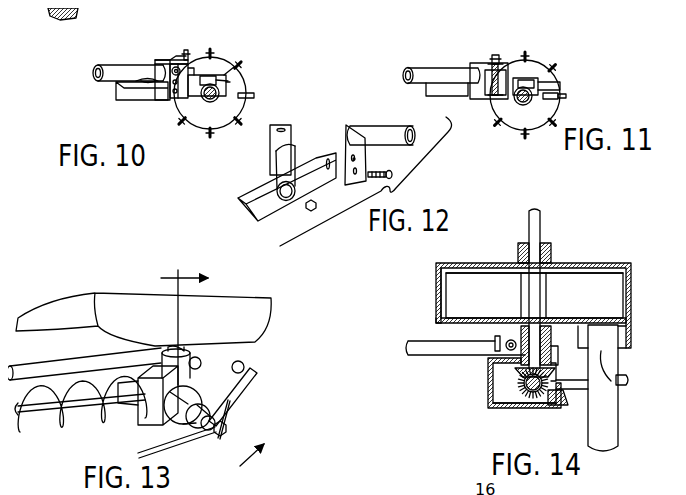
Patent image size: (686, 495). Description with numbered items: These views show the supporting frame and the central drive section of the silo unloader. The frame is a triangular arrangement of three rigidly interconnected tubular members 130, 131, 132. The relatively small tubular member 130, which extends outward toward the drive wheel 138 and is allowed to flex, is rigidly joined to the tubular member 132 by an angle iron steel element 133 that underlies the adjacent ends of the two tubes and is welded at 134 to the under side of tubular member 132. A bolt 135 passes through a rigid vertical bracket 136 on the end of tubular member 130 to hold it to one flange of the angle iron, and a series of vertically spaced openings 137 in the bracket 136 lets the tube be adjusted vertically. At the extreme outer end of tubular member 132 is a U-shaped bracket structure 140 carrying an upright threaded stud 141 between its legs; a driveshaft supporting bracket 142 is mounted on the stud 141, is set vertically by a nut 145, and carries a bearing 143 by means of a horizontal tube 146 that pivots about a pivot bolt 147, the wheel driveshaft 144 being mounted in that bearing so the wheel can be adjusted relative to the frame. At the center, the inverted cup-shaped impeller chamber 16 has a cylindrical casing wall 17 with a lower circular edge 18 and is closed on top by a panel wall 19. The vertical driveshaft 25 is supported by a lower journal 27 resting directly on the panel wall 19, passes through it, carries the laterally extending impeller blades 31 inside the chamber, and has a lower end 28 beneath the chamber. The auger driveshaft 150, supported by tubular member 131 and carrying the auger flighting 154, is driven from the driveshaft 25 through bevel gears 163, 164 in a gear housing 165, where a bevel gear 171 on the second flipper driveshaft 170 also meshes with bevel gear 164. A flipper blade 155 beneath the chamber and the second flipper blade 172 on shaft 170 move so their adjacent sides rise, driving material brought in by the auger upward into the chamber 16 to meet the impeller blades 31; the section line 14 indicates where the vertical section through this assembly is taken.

In FIG. 13, the section line 14— 14 is at (202, 378).
In FIG. 13, the impeller chamber 16 is at (254, 313).
In FIG. 14, the impeller chamber 16 is at (477, 262).
In FIG. 14, the cylindrical casing wall 17 is at (442, 288).
In FIG. 14, the lower circular edge 18 is at (438, 325).
In FIG. 14, the panel wall 19 is at (613, 265).
In FIG. 13, the driveshaft 25 is at (181, 353).
In FIG. 14, the driveshaft 25 is at (538, 225).
In FIG. 14, the lower journal 27 is at (549, 256).
In FIG. 14, the lower end 28 is at (541, 341).
In FIG. 14, the impeller blades 31 is at (615, 298).
In FIG. 10, the tubular member 130 is at (177, 61).
In FIG. 12, the tubular member 130 is at (392, 132).
In FIG. 13, the tubular member 130 is at (84, 364).
In FIG. 14, the tubular member 130 is at (423, 352).
In FIG. 14, the tubular member 131 is at (498, 338).
In FIG. 10, the tubular member 132 is at (107, 66).
In FIG. 11, the tubular member 132 is at (423, 72).
In FIG. 12, the tubular member 132 is at (289, 155).
In FIG. 10, the angle iron steel element 133 is at (128, 99).
In FIG. 12, the angle iron steel element 133 is at (261, 194).
In FIG. 10, the weld 134 is at (150, 76).
In FIG. 10, the bolt 135 is at (177, 96).
In FIG. 12, the bolt 135 is at (393, 175).
In FIG. 10, the vertical bracket 136 is at (170, 88).
In FIG. 12, the vertical bracket 136 is at (347, 187).
In FIG. 12, the openings 137 is at (360, 161).
In FIG. 11, the drive wheel 138 is at (558, 84).
In FIG. 10, the U-shaped bracket structure 140 is at (165, 61).
In FIG. 11, the U-shaped bracket structure 140 is at (476, 65).
In FIG. 12, the U-shaped bracket structure 140 is at (272, 131).
In FIG. 10, the threaded stud 141 is at (191, 57).
In FIG. 11, the threaded stud 141 is at (498, 57).
In FIG. 10, the driveshaft supporting bracket 142 is at (213, 77).
In FIG. 11, the driveshaft supporting bracket 142 is at (518, 80).
In FIG. 10, the bearing 143 is at (214, 102).
In FIG. 11, the bearing 143 is at (537, 107).
In FIG. 10, the wheel driveshaft 144 is at (256, 97).
In FIG. 11, the wheel driveshaft 144 is at (560, 96).
In FIG. 11, the nut 145 is at (495, 83).
In FIG. 10, the horizontal tube 146 is at (225, 80).
In FIG. 11, the horizontal tube 146 is at (524, 80).
In FIG. 10, the pivot bolt 147 is at (219, 90).
In FIG. 11, the pivot bolt 147 is at (538, 90).
In FIG. 13, the auger driveshaft 150 is at (93, 412).
In FIG. 14, the auger driveshaft 150 is at (522, 388).
In FIG. 13, the auger flighting 154 is at (58, 424).
In FIG. 13, the flipper blade 155 is at (136, 424).
In FIG. 14, the bevel gear 163 is at (526, 398).
In FIG. 14, the bevel gear 164 is at (517, 373).
In FIG. 13, the gear housing 165 is at (143, 388).
In FIG. 14, the gear housing 165 is at (532, 411).
In FIG. 13, the second flipper driveshaft 170 is at (230, 433).
In FIG. 14, the second flipper driveshaft 170 is at (575, 392).
In FIG. 14, the bevel gear 171 is at (555, 401).
In FIG. 13, the second flipper blade 172 is at (258, 388).
In FIG. 14, the second flipper blade 172 is at (610, 425).